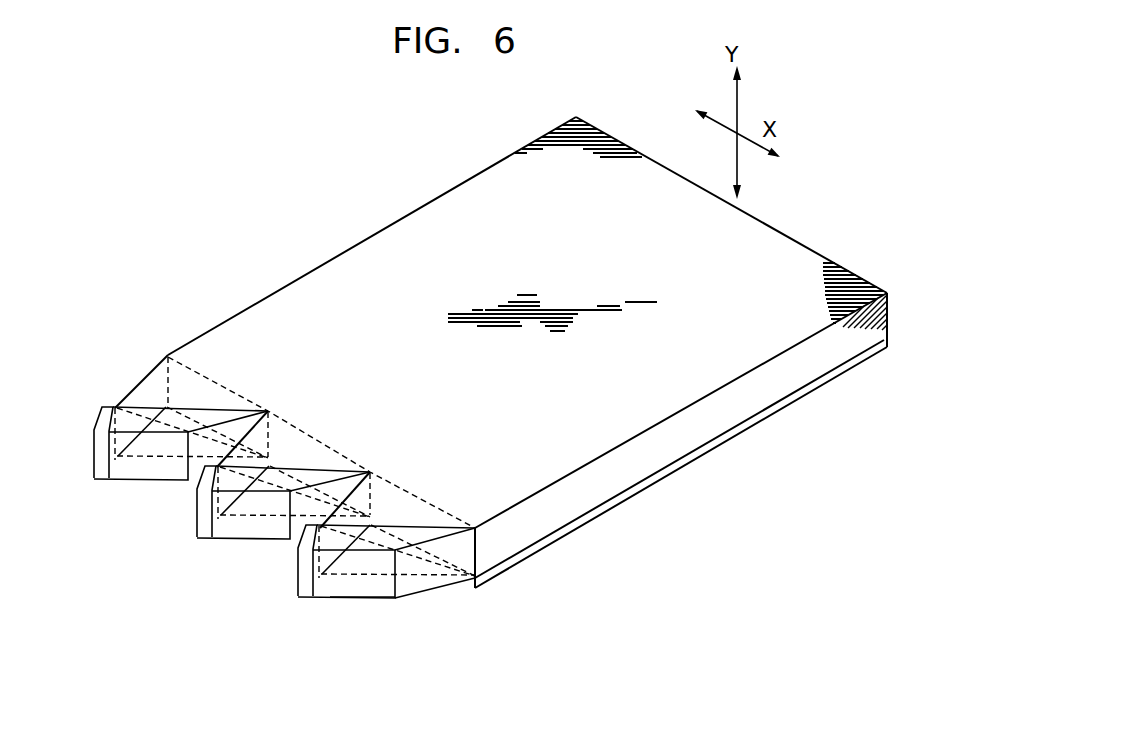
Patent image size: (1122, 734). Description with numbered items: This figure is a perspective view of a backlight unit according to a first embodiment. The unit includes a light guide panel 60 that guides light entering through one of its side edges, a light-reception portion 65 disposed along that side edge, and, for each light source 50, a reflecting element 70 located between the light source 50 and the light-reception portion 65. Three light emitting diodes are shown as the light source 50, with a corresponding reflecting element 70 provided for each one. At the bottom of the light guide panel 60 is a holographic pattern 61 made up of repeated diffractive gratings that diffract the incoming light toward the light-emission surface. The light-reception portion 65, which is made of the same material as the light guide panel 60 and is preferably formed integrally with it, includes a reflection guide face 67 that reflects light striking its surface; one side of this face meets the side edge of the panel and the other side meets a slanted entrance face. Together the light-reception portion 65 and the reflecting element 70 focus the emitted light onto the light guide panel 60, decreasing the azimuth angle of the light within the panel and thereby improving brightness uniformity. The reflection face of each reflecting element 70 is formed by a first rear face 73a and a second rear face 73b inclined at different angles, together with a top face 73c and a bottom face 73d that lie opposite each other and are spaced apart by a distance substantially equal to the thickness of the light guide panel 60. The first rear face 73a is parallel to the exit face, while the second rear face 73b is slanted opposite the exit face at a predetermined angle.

The light source 50 is at (298, 568).
The light guide panel 60 is at (802, 262).
The holographic pattern 61 is at (850, 368).
The light-reception portion 65 is at (402, 492).
The reflection guide face 67 is at (370, 472).
The reflecting element 70 is at (363, 565).
The first rear face 73a is at (333, 583).
The second rear face 73b is at (452, 577).
The top face 73c is at (432, 528).
The bottom face 73d is at (380, 582).